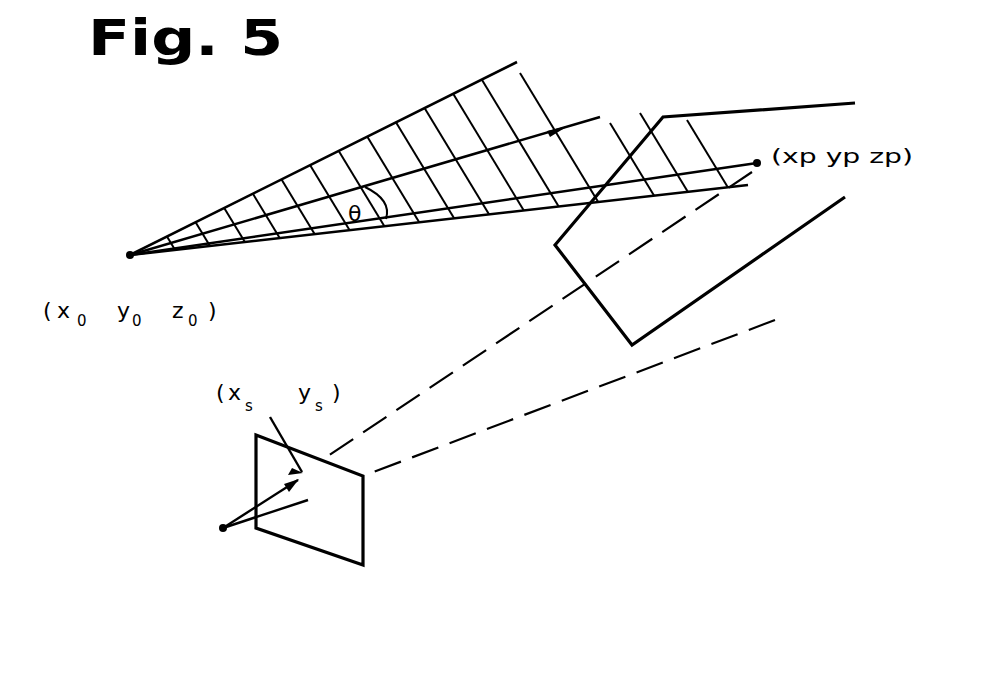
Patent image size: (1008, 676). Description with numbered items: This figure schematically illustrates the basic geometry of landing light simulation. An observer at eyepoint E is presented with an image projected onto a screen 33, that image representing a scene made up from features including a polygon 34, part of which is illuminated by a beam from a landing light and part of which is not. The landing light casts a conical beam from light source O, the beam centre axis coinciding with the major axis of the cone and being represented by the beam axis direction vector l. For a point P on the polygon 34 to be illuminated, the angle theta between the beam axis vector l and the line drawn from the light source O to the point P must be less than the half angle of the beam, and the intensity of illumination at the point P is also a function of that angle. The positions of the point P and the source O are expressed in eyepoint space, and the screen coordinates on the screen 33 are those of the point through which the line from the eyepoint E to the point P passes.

The screen 33 is at (313, 540).
The polygon 34 is at (803, 226).
The light source O is at (115, 257).
The point on the polygon P is at (758, 146).
The eyepoint E is at (249, 513).
The beam axis direction vector l is at (626, 103).